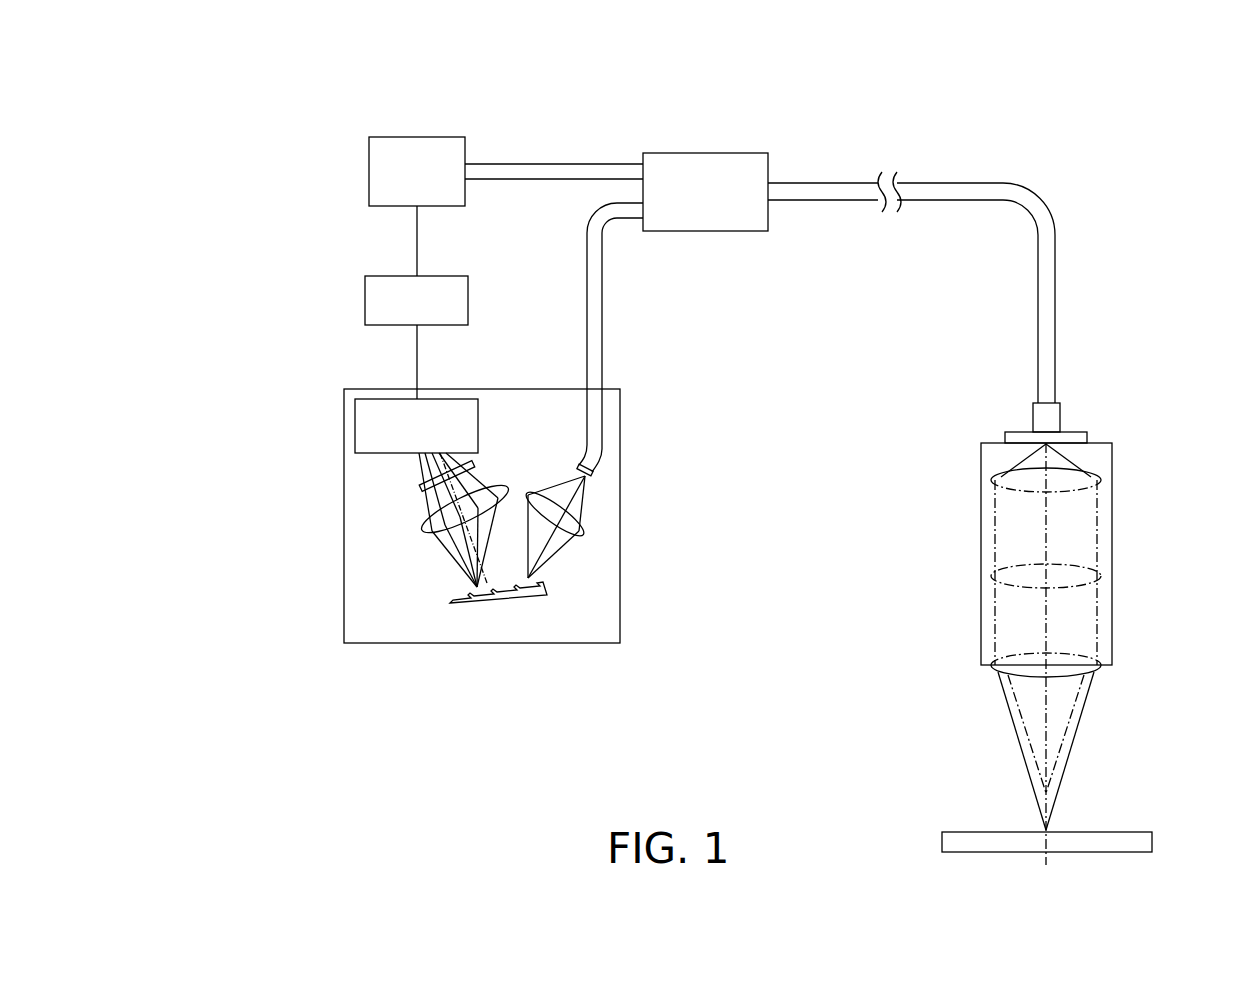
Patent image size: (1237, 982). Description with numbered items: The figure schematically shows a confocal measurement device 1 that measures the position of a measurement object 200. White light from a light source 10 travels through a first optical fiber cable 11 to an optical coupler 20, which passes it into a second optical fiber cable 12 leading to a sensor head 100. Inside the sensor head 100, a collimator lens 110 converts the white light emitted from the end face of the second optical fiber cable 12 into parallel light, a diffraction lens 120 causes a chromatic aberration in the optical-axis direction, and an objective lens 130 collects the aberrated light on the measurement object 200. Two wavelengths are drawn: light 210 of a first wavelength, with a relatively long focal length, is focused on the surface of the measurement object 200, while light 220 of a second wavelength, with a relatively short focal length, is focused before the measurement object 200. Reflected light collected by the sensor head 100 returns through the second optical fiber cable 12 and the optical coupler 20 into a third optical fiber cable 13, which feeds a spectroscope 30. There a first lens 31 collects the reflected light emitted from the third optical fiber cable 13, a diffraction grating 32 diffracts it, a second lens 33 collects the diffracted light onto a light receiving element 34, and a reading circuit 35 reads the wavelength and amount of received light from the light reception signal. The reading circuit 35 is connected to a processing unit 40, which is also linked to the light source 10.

The confocal measurement device 1 is at (1077, 68).
The light source 10 is at (414, 136).
The first optical fiber cable 11 is at (551, 162).
The second optical fiber cable 12 is at (992, 183).
The third optical fiber cable 13 is at (604, 318).
The optical coupler 20 is at (705, 152).
The spectroscope 30 is at (507, 388).
The first lens 31 is at (585, 537).
The diffraction grating 32 is at (549, 597).
The second lens 33 is at (426, 533).
The light receiving element 34 is at (421, 484).
The reading circuit 35 is at (344, 427).
The processing unit 40 is at (365, 292).
The sensor head 100 is at (957, 544).
The collimator lens 110 is at (1102, 477).
The diffraction lens 120 is at (1102, 575).
The objective lens 130 is at (1102, 660).
The measurement object 200 is at (942, 843).
The light of a first wavelength 210 is at (1035, 797).
The light of a second wavelength 220 is at (1033, 770).